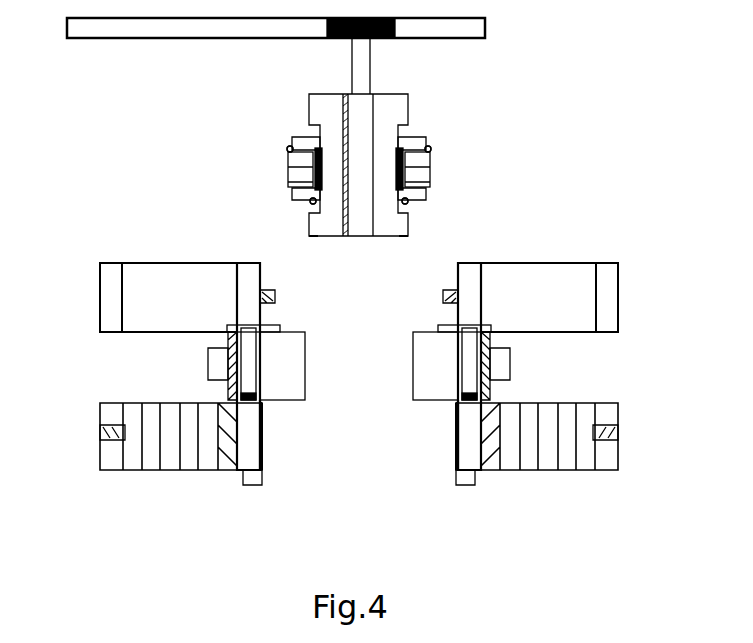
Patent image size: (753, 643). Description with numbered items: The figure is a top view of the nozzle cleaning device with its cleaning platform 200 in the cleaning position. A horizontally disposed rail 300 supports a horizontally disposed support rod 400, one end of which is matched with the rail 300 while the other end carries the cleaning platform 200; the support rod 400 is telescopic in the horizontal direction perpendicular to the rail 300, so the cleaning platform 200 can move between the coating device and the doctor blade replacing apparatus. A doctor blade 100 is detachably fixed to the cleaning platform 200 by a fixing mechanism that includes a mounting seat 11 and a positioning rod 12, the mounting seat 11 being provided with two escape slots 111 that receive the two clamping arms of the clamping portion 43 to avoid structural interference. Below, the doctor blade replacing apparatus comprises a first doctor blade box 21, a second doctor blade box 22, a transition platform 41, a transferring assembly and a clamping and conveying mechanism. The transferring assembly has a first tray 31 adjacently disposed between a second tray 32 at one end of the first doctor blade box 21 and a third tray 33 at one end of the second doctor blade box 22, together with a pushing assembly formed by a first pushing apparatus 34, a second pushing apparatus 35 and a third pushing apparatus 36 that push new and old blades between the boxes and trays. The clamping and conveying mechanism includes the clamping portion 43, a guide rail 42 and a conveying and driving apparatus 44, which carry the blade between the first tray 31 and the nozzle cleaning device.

The rail 300 is at (163, 39).
The support rod 400 is at (357, 66).
The cleaning platform 200 is at (357, 112).
The doctor blade 100 is at (300, 167).
The positioning rod 12 is at (290, 149).
The escape slot 111 is at (313, 201).
The mounting seat 11 is at (323, 225).
The second doctor blade box 22 is at (130, 263).
The third tray 33 is at (237, 283).
The third pushing apparatus 36 is at (275, 298).
The first tray 31 is at (260, 368).
The transition platform 41 is at (295, 370).
The clamping portion 43 is at (233, 338).
The conveying and driving apparatus 44 is at (217, 365).
The first doctor blade box 21 is at (110, 472).
The first pushing apparatus 34 is at (108, 430).
The second pushing apparatus 35 is at (253, 485).
The guide rail 42 is at (270, 405).
The second tray 32 is at (262, 448).